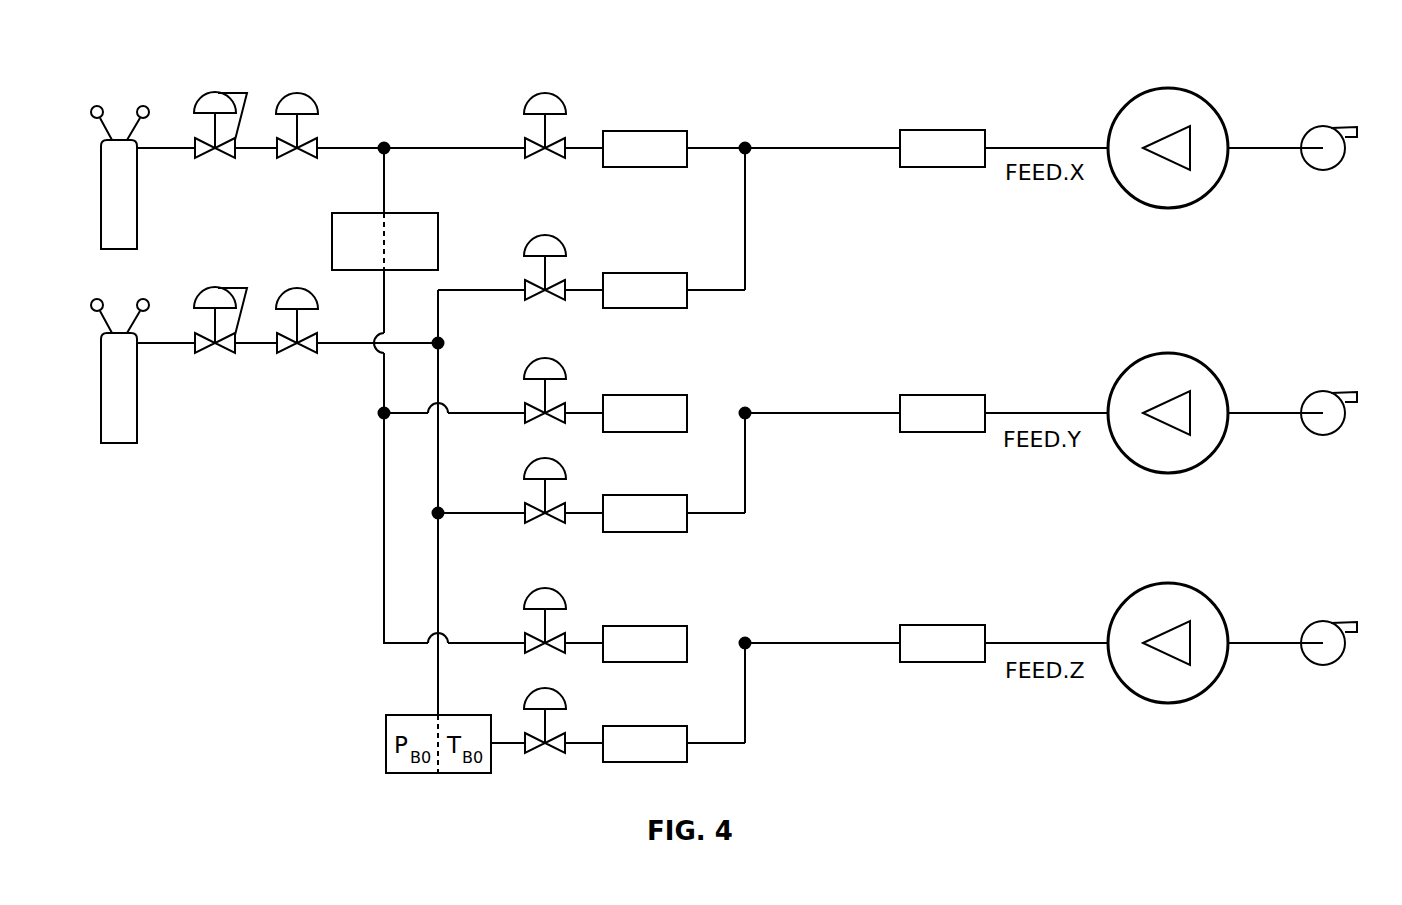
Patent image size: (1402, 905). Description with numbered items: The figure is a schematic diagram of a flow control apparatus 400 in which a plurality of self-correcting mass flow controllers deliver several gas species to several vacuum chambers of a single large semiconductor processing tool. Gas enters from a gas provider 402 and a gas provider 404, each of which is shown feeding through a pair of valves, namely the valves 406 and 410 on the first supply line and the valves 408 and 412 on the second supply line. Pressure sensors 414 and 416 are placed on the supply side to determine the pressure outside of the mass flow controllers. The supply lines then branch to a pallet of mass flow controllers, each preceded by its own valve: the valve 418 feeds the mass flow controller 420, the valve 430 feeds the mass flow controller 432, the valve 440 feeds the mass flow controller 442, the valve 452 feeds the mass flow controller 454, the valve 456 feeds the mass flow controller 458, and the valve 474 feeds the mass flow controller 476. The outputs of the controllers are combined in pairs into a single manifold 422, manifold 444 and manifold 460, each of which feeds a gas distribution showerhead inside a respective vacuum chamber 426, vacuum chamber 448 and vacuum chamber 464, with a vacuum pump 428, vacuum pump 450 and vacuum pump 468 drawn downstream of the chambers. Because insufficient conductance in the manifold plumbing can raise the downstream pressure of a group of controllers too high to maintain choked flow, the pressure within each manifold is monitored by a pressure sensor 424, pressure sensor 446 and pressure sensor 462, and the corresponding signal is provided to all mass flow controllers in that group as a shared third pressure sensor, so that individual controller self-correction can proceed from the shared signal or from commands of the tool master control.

The apparatus 400 is at (1287, 97).
The gas provider 402 is at (140, 243).
The gas provider 404 is at (162, 474).
The valve 406 is at (200, 86).
The valve 408 is at (200, 284).
The valve 410 is at (282, 86).
The valve 412 is at (282, 284).
The pressure sensor 414 is at (357, 213).
The pressure sensor 416 is at (413, 213).
The valve 418 is at (530, 83).
The mass flow controller 420 is at (630, 124).
The manifold 422 is at (808, 208).
The pressure sensor 424 is at (951, 130).
The vacuum chamber 426 is at (1158, 273).
The vacuum pump X 428 is at (1318, 294).
The valve 430 is at (493, 236).
The mass flow controller 432 is at (630, 271).
The valve 440 is at (483, 379).
The mass flow controller 442 is at (630, 398).
The manifold 444 is at (808, 483).
The pressure sensor 446 is at (951, 395).
The vacuum chamber 448 is at (1158, 539).
The vacuum pump Y 450 is at (1318, 554).
The valve 452 is at (483, 554).
The mass flow controller 454 is at (630, 494).
The valve 456 is at (492, 673).
The mass flow controller 458 is at (630, 623).
The manifold 460 is at (808, 698).
The pressure sensor 462 is at (951, 625).
The vacuum chamber 464 is at (1158, 781).
The vacuum pump Z 468 is at (1318, 781).
The valve 474 is at (530, 814).
The mass flow controller 476 is at (630, 724).